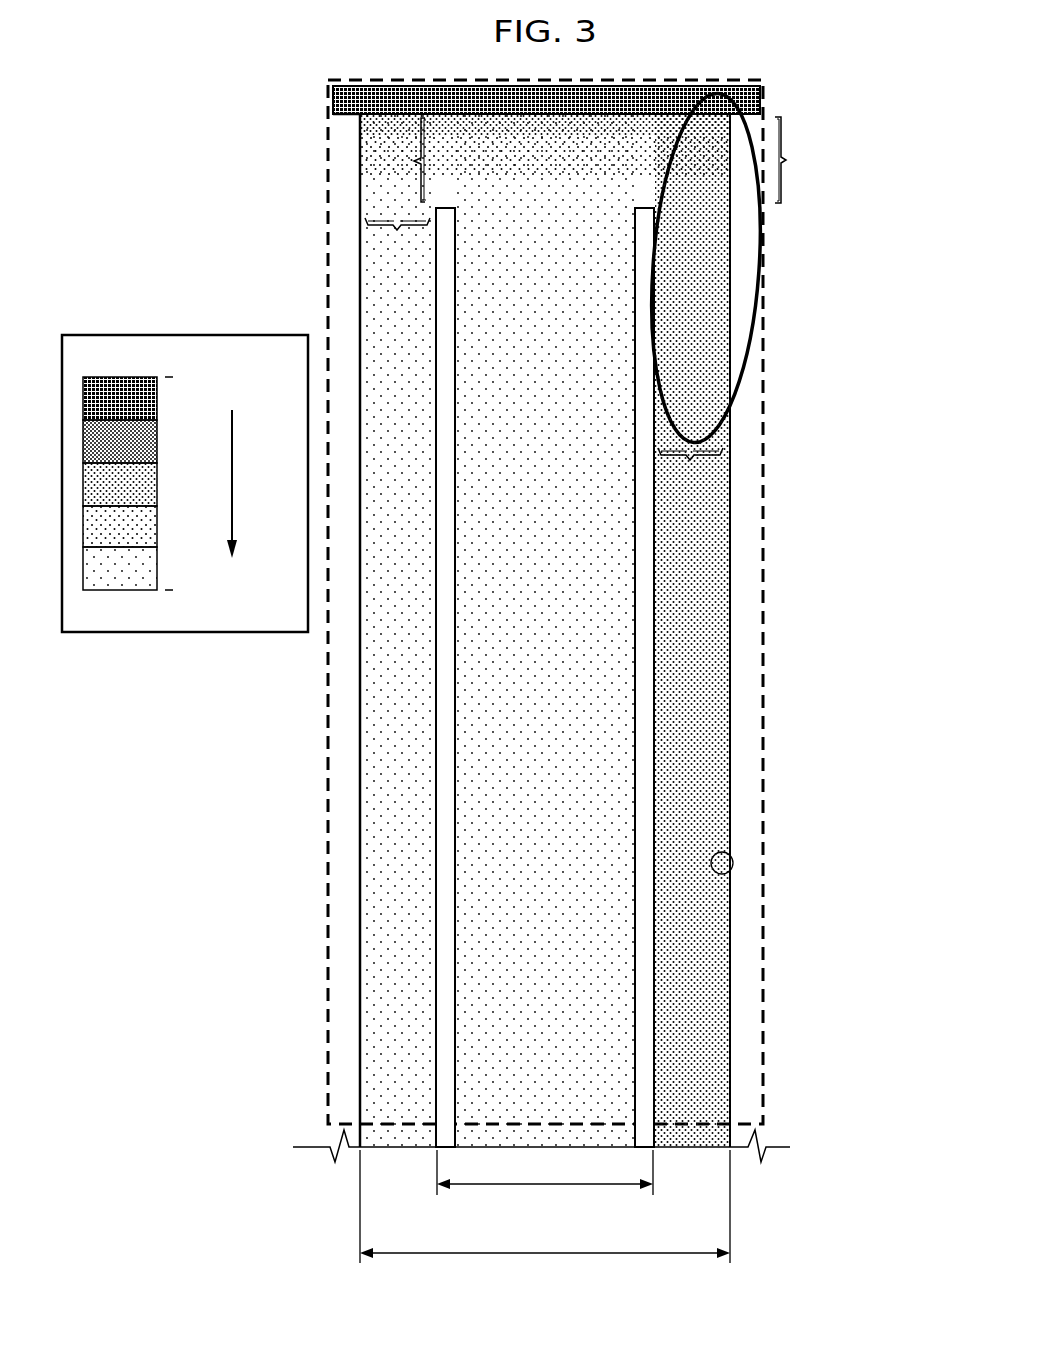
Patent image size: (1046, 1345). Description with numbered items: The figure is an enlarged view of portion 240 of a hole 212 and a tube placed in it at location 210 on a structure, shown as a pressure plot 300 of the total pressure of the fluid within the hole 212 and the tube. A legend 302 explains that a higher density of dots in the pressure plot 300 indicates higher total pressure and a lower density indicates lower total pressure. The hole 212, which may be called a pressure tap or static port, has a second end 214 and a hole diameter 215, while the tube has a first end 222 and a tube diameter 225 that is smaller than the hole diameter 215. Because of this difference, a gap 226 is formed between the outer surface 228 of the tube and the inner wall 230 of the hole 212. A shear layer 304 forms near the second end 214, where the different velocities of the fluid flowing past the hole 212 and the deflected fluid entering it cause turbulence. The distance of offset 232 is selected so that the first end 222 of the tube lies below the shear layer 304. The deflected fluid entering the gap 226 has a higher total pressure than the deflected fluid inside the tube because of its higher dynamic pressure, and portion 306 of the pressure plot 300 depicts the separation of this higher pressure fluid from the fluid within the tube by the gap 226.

The location 210 is at (441, 72).
The hole 212 is at (732, 678).
The second end 214 is at (354, 120).
The hole diameter 215 is at (545, 1255).
The first end 222 is at (458, 205).
The tube diameter 225 is at (545, 1185).
The gap 226 is at (796, 452).
The outer surface 228 is at (436, 755).
The inner wall 230 is at (733, 870).
The offset 232 is at (398, 160).
The portion 240 is at (326, 717).
The pressure plot 300 is at (701, 556).
The legend 302 is at (185, 335).
The shear layer 304 is at (802, 160).
The portion 306 is at (743, 362).